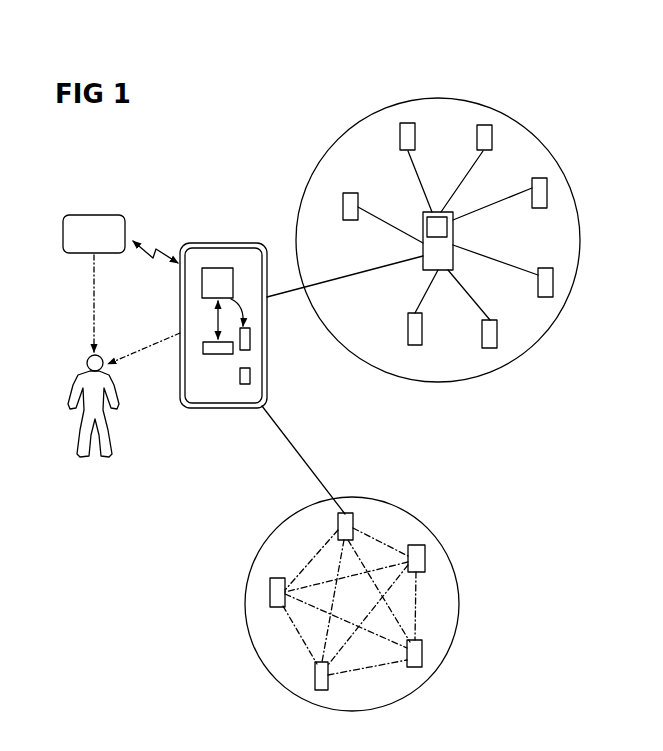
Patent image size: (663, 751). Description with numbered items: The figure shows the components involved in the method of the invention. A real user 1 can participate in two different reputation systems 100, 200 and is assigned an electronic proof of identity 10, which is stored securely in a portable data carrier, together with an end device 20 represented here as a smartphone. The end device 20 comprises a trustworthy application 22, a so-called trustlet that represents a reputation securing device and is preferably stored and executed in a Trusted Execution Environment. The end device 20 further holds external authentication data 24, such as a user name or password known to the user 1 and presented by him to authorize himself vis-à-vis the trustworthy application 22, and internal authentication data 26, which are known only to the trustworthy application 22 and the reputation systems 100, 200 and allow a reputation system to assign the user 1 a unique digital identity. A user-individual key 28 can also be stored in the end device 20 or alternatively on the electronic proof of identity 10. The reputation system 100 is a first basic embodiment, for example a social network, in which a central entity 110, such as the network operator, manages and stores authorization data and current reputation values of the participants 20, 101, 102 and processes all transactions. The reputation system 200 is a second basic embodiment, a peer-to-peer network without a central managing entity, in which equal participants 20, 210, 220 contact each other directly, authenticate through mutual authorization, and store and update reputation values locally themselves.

The user 1 is at (80, 377).
The electronic proof of identity 10 is at (94, 214).
The end device 20 is at (238, 336).
The trustworthy application 22 is at (222, 267).
The external authentication data 24 is at (218, 356).
The internal authentication data 26 is at (250, 338).
The user-individual key 28 is at (250, 376).
The reputation system 100 is at (580, 225).
The participant 101 is at (475, 135).
The participant 102 is at (537, 210).
The central entity 110 is at (455, 233).
The reputation system 200 is at (460, 598).
The participant 210 is at (346, 511).
The participant 220 is at (418, 543).